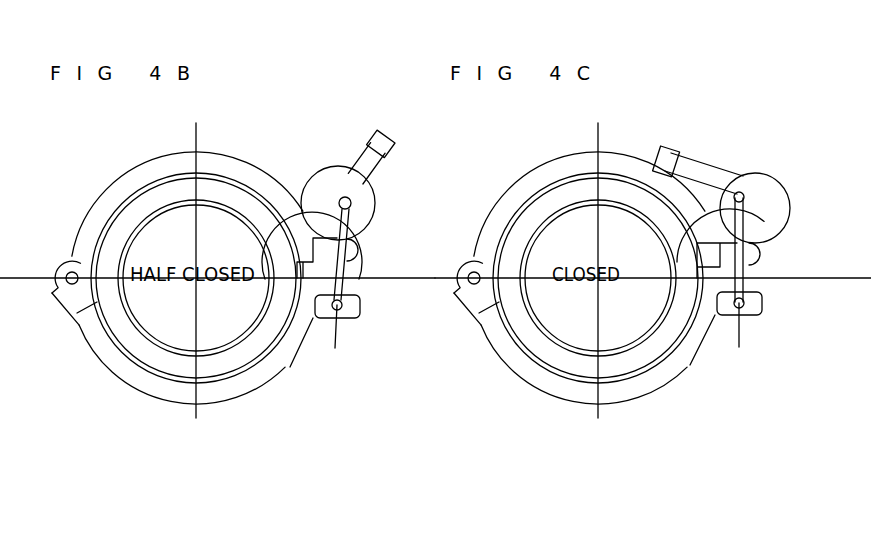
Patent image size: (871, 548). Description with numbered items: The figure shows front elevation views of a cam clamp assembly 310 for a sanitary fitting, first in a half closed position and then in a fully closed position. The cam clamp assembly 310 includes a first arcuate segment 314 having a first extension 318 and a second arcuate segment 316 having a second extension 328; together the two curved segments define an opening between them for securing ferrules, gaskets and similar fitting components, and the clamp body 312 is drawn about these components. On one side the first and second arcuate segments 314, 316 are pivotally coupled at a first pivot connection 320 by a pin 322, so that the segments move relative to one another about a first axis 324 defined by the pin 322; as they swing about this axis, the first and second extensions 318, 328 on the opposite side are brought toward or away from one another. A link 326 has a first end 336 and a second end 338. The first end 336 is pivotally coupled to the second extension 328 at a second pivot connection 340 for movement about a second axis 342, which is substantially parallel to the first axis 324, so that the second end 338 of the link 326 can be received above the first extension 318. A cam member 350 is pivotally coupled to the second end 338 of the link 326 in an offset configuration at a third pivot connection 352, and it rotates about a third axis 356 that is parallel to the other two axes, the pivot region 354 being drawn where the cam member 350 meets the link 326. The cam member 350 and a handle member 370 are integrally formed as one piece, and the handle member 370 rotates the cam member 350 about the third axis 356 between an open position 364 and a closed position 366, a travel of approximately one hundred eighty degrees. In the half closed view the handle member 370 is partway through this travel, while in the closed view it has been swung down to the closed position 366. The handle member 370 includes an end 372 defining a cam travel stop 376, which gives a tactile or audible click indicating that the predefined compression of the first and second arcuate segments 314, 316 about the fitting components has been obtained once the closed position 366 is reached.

In FIG. 4B, the cam clamp assembly 310 is at (285, 79).
In FIG. 4C, the cam clamp assembly 310 is at (687, 79).
In FIG. 4B, the clamp body 312 is at (5, 213).
In FIG. 4B, the first arcuate segment 314 is at (77, 236).
In FIG. 4C, the first arcuate segment 314 is at (479, 236).
In FIG. 4B, the second arcuate segment 316 is at (123, 378).
In FIG. 4C, the second arcuate segment 316 is at (525, 378).
In FIG. 4B, the first extension 318 is at (357, 252).
In FIG. 4C, the first extension 318 is at (762, 253).
In FIG. 4B, the first pivot connection 320 is at (48, 322).
In FIG. 4C, the first pivot connection 320 is at (450, 322).
In FIG. 4B, the pin 322 is at (100, 276).
In FIG. 4C, the pin 322 is at (502, 276).
In FIG. 4B, the first axis 324 is at (100, 278).
In FIG. 4C, the first axis 324 is at (504, 278).
In FIG. 4B, the link 326 is at (347, 268).
In FIG. 4C, the link 326 is at (748, 268).
In FIG. 4B, the second extension 328 is at (360, 312).
In FIG. 4C, the second extension 328 is at (760, 308).
In FIG. 4B, the first end 336 is at (272, 276).
In FIG. 4C, the first end 336 is at (672, 271).
In FIG. 4B, the second end 338 is at (262, 258).
In FIG. 4C, the second end 338 is at (662, 258).
In FIG. 4B, the second pivot connection 340 is at (320, 333).
In FIG. 4C, the second pivot connection 340 is at (727, 325).
In FIG. 4B, the second axis 342 is at (283, 292).
In FIG. 4C, the second axis 342 is at (681, 292).
In FIG. 4B, the cam member 350 is at (327, 165).
In FIG. 4C, the cam member 350 is at (737, 140).
In FIG. 4B, the third pivot connection 352 is at (345, 192).
In FIG. 4C, the third pivot connection 352 is at (770, 222).
In FIG. 4B, the bolt pivot 354 is at (352, 202).
In FIG. 4C, the bolt pivot 354 is at (742, 199).
In FIG. 4B, the third axis 356 is at (343, 197).
In FIG. 4C, the third axis 356 is at (739, 196).
In FIG. 4B, the open position 364 is at (11, 291).
In FIG. 4C, the closed position 366 is at (773, 278).
In FIG. 4B, the handle member 370 is at (388, 150).
In FIG. 4C, the handle member 370 is at (681, 168).
In FIG. 4B, the end 372 is at (393, 137).
In FIG. 4C, the end 372 is at (665, 153).
In FIG. 4C, the cam travel stop 376 is at (663, 168).